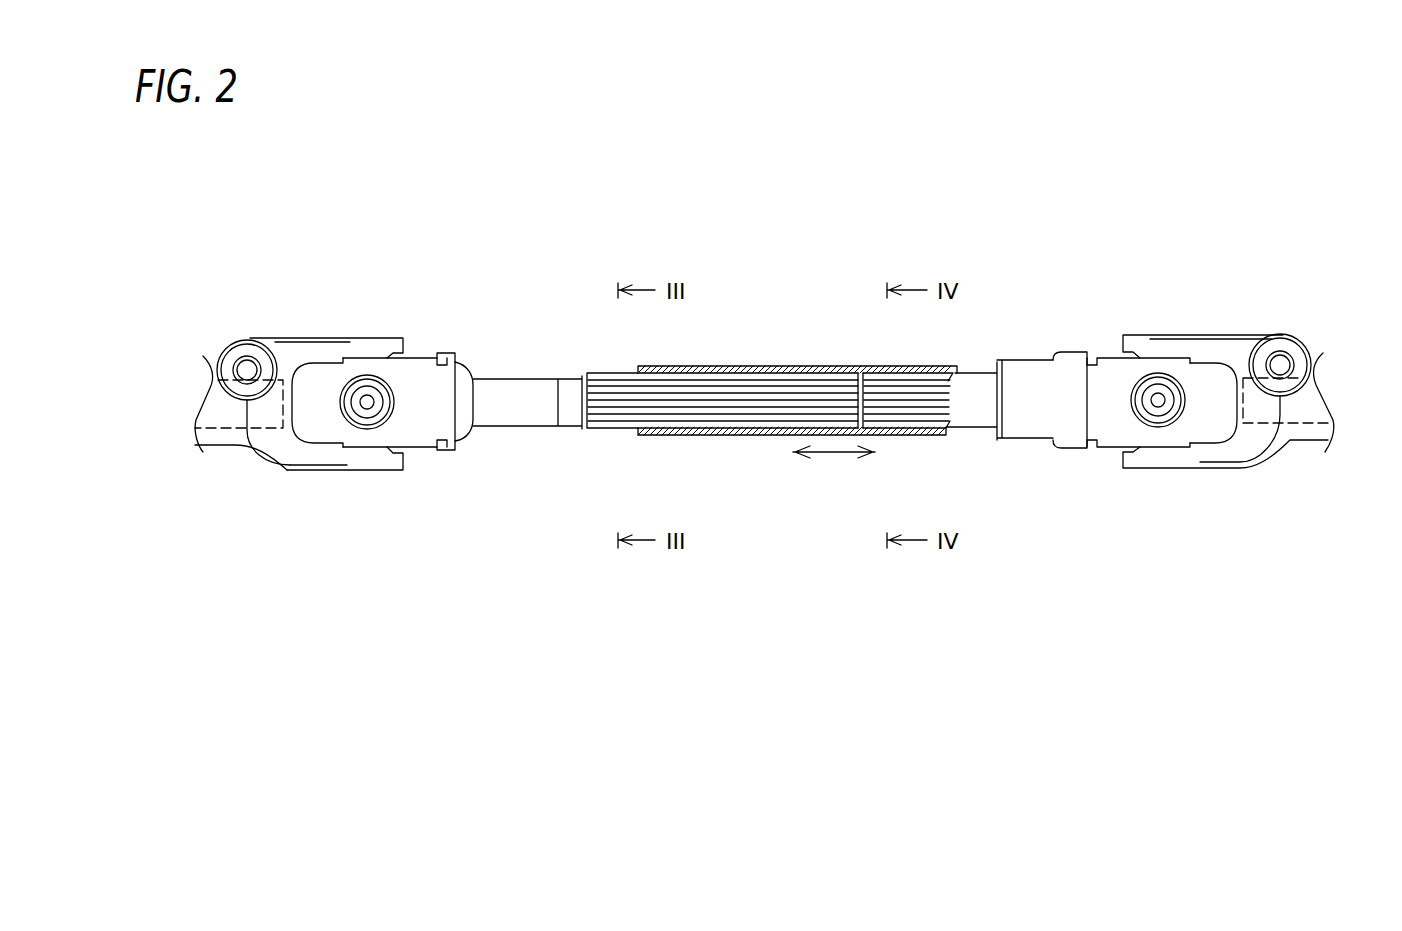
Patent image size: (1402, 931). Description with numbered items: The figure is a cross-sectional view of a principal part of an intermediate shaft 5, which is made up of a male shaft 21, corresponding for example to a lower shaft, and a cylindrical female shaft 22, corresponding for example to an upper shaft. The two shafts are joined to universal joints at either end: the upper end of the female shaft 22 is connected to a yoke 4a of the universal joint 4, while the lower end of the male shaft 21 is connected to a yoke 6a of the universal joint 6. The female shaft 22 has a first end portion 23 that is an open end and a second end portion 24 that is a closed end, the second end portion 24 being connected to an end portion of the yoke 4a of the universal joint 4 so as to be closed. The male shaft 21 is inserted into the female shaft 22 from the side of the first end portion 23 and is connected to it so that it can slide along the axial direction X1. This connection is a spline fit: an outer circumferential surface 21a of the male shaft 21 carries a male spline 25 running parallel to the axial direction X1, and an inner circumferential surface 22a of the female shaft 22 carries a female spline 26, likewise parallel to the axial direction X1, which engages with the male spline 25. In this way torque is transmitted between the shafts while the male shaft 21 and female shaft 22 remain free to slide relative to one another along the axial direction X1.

The universal joint 4 is at (1226, 328).
The yoke 4a is at (1110, 410).
The intermediate shaft 5 is at (726, 338).
The universal joint 6 is at (307, 329).
The yoke 6a is at (424, 432).
The male shaft 21 is at (531, 370).
The outer circumferential surface 21a is at (605, 428).
The female shaft 22 is at (774, 357).
The inner circumferential surface 22a is at (908, 380).
The first end portion 23 is at (646, 366).
The second end portion 24 is at (1018, 370).
The male spline 25 is at (690, 413).
The female spline 26 is at (908, 410).
The axial direction X1 is at (835, 456).